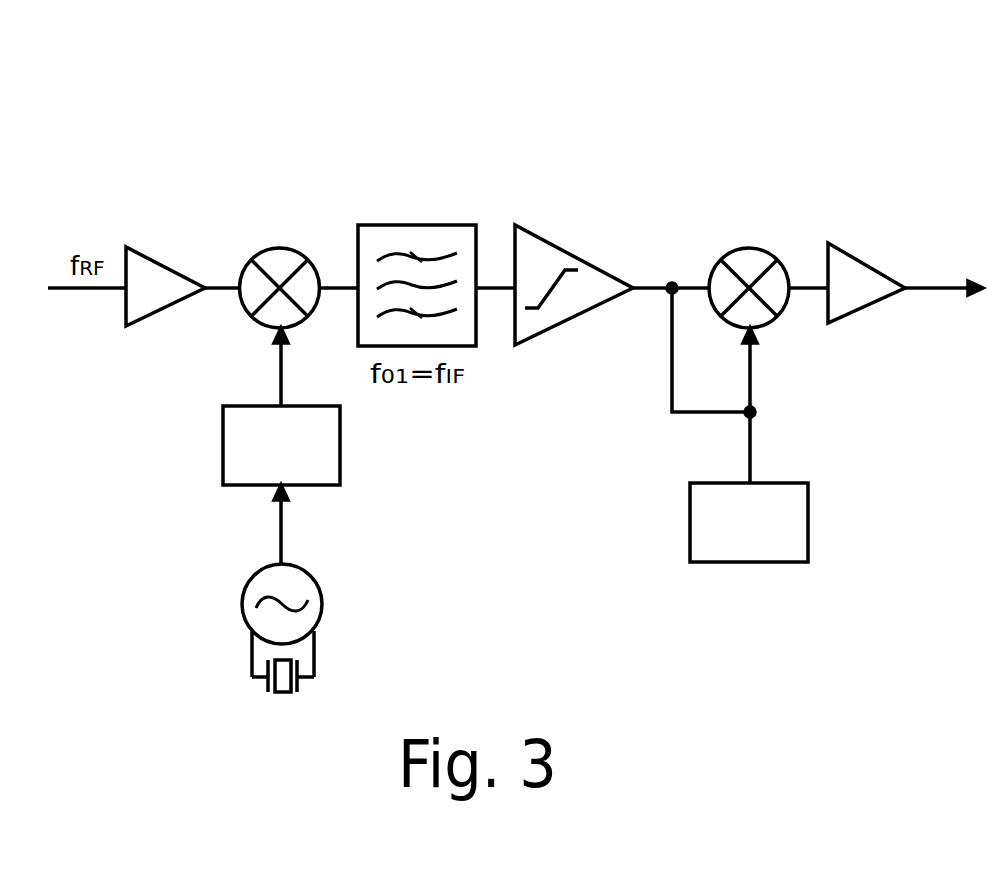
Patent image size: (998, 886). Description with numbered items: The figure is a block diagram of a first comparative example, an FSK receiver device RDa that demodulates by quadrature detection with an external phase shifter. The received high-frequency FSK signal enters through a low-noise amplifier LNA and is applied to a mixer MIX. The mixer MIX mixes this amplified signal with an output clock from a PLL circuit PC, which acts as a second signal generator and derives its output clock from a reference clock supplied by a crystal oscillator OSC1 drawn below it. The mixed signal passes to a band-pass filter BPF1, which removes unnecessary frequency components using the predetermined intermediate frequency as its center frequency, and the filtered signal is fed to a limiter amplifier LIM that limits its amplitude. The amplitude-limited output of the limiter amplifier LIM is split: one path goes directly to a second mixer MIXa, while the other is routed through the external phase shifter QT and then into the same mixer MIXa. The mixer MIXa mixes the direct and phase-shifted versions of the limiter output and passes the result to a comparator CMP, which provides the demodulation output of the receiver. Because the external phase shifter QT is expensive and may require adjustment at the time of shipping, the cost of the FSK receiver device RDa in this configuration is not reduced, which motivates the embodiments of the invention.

The FSK receiver device RDa is at (404, 95).
The low-noise amplifier LNA is at (165, 273).
The mixer MIX is at (280, 270).
The band-pass filter BPF1 is at (417, 268).
The limiter amplifier LIM is at (574, 277).
The mixer MIXa is at (749, 268).
The comparator CMP is at (866, 269).
The PLL circuit PC is at (299, 463).
The crystal oscillator OSC1 is at (314, 588).
The external phase shifter QT is at (767, 539).